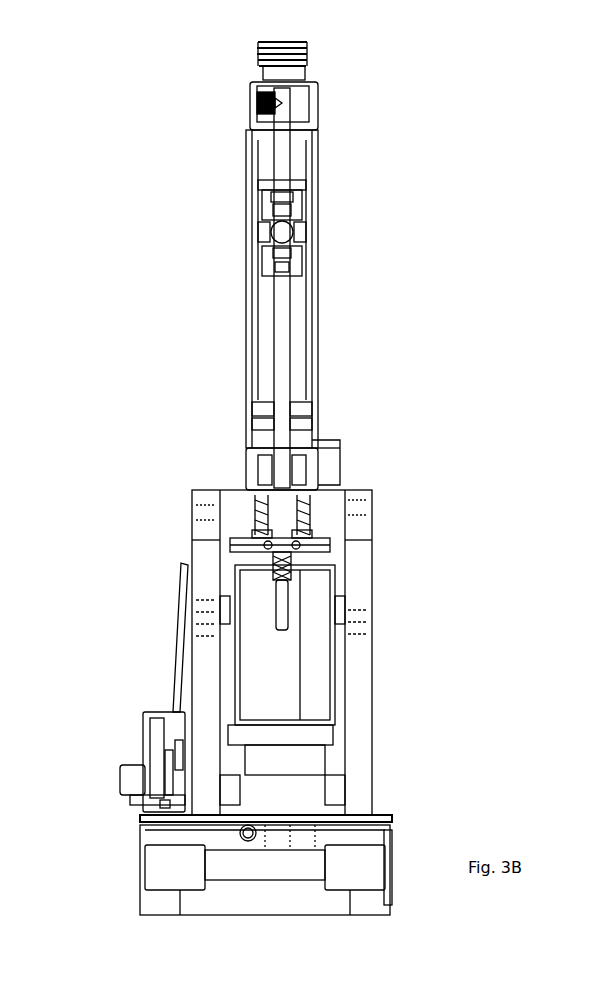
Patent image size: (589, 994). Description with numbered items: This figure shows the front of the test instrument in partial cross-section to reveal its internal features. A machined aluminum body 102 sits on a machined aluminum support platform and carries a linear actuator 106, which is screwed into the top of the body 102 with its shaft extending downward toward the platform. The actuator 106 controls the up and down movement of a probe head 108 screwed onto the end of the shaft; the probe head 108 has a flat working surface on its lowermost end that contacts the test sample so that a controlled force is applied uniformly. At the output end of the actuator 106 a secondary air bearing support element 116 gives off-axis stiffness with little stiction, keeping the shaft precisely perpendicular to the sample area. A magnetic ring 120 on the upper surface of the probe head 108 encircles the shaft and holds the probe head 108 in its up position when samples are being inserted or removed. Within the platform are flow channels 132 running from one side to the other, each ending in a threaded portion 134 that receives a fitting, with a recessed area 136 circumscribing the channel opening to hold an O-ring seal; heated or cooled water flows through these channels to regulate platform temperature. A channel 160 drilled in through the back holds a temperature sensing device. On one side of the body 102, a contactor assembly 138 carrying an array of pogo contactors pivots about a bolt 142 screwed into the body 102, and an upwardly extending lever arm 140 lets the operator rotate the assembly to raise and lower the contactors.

The body 102 is at (365, 577).
The linear actuator 106 is at (245, 220).
The probe head 108 is at (290, 760).
The secondary air bearing support element 116 is at (240, 535).
The magnetic ring 120 is at (245, 570).
The flow channel 132 is at (260, 860).
The threaded portion 134 is at (185, 880).
The recessed area 136 is at (390, 895).
The contactor assembly 138 is at (145, 715).
The lever arm 140 is at (175, 608).
The bolt 142 is at (125, 780).
The channel 160 is at (240, 833).